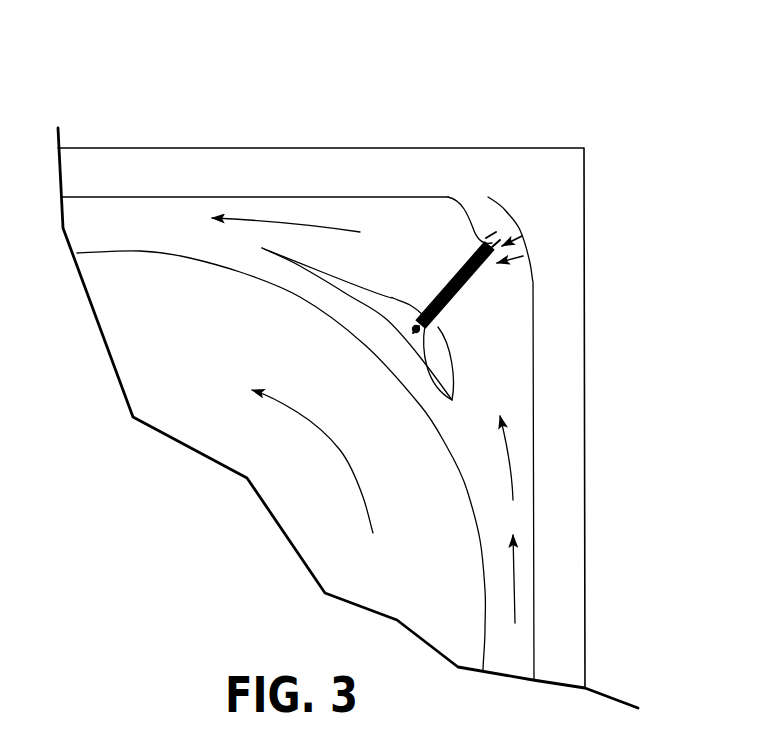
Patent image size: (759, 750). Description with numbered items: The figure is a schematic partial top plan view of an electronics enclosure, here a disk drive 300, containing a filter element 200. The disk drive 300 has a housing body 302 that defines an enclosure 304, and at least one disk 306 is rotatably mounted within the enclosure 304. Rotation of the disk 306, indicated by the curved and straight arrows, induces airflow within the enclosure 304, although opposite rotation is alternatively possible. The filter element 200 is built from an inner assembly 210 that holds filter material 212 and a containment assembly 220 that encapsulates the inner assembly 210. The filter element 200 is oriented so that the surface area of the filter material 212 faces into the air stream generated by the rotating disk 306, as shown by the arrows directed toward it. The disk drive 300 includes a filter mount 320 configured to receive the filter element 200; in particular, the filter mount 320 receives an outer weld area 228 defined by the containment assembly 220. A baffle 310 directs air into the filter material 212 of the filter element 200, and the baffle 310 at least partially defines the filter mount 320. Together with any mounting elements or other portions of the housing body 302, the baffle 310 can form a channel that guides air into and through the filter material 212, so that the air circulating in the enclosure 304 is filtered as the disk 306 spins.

The filter element 200 is at (552, 302).
The inner assembly 210 is at (520, 263).
The filter material 212 is at (455, 308).
The containment assembly 220 is at (523, 236).
The outer weld area 228 is at (490, 247).
The disk drive 300 is at (363, 90).
The housing body 302 is at (183, 172).
The enclosure 304 is at (135, 215).
The disk 306 is at (302, 417).
The baffle 310 is at (347, 292).
The filter mount 320 is at (478, 223).